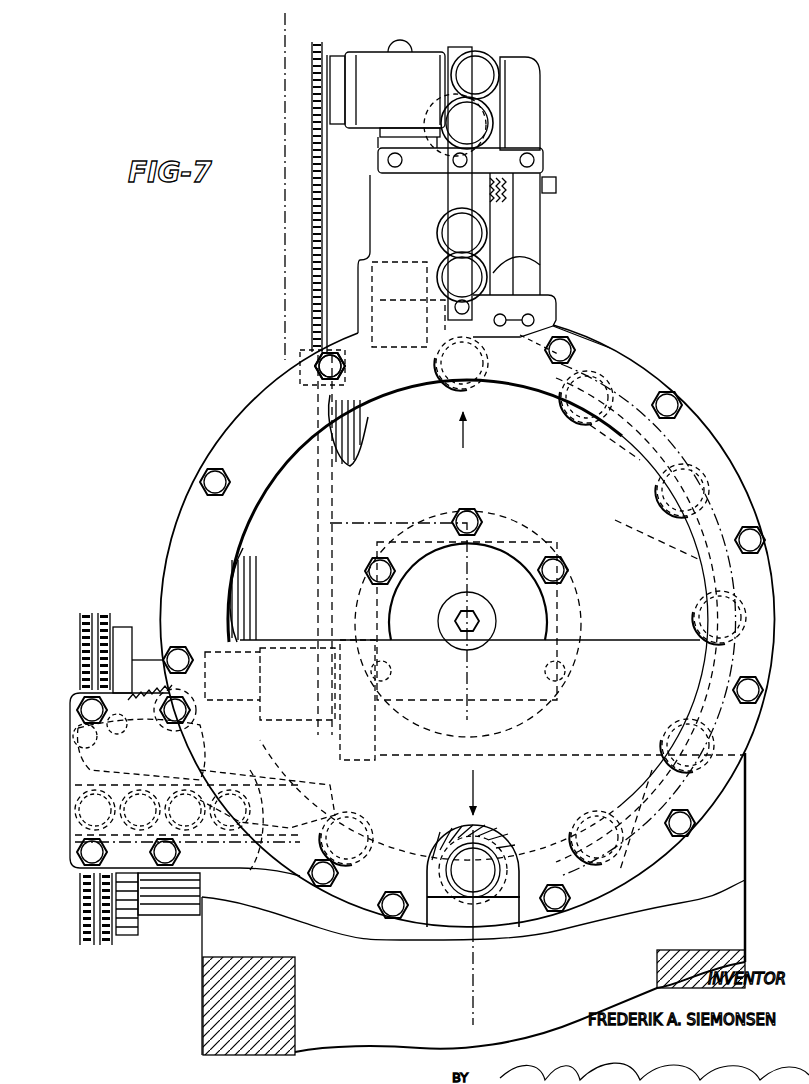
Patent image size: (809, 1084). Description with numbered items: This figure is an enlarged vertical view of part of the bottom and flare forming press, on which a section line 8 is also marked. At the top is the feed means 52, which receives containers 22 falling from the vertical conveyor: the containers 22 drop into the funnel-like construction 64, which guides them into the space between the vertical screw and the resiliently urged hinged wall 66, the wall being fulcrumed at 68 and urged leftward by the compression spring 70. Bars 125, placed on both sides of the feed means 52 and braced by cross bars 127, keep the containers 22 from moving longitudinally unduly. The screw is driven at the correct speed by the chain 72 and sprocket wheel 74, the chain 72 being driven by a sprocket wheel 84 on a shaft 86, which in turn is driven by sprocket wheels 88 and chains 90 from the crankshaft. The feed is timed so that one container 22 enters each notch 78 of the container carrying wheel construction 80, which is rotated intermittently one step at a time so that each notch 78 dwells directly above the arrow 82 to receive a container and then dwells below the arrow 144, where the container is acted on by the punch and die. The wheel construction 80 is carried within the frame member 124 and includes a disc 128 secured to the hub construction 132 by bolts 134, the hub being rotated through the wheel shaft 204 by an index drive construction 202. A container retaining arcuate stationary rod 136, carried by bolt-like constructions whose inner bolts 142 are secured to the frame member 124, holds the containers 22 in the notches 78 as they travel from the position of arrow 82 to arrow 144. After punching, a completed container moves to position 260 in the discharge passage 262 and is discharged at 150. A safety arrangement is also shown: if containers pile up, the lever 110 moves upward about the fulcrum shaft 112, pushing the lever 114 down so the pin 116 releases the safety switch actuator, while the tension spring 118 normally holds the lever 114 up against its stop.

The section line 8- 8 is at (318, 22).
The containers 22 is at (482, 52).
The feed means 52 is at (602, 131).
The funnel-like construction 64 is at (492, 118).
The resiliently urged hinged wall 66 is at (541, 268).
The fulcrum of hinged wall 68 is at (506, 318).
The compression spring 70 is at (512, 200).
The chain 72 is at (328, 198).
The sprocket wheel 74 is at (325, 45).
The notches 78 is at (350, 448).
The container carrying wheel construction 80 is at (589, 478).
The arrow 82 is at (460, 434).
The sprocket wheel 84 is at (316, 554).
The shaft 86 is at (268, 702).
The sprocket wheels 88 is at (79, 626).
The chains 90 is at (86, 612).
The lever 110 is at (355, 700).
The fulcrum shaft 112 is at (174, 724).
The lever 114 is at (120, 748).
The pin 116 is at (76, 740).
The tension spring 118 is at (152, 665).
The frame member 124 is at (622, 370).
The bars 125 is at (467, 234).
The cross bars 127 is at (515, 157).
The disc 128 is at (632, 468).
The hub construction 132 is at (520, 578).
The bolts 134 is at (470, 510).
The container retaining arcuate stationary rod 136 is at (512, 925).
The inner bolts 142 is at (670, 400).
The arrow 144 is at (475, 792).
The discharge position 150 is at (60, 812).
The index drive construction 202 is at (575, 648).
The wheel shaft 204 is at (462, 630).
The position 260 is at (330, 838).
The discharge passage 262 is at (254, 870).